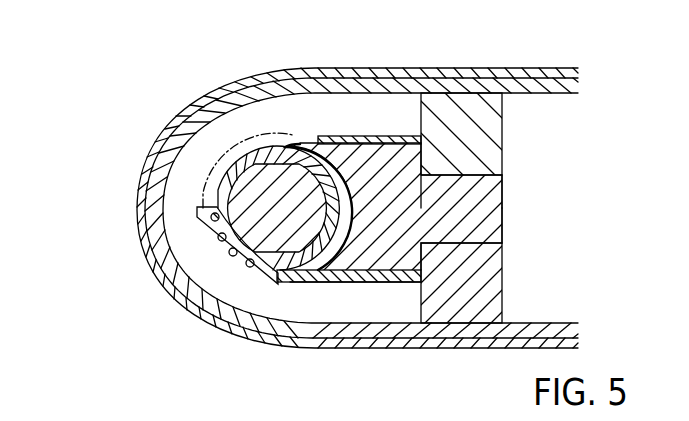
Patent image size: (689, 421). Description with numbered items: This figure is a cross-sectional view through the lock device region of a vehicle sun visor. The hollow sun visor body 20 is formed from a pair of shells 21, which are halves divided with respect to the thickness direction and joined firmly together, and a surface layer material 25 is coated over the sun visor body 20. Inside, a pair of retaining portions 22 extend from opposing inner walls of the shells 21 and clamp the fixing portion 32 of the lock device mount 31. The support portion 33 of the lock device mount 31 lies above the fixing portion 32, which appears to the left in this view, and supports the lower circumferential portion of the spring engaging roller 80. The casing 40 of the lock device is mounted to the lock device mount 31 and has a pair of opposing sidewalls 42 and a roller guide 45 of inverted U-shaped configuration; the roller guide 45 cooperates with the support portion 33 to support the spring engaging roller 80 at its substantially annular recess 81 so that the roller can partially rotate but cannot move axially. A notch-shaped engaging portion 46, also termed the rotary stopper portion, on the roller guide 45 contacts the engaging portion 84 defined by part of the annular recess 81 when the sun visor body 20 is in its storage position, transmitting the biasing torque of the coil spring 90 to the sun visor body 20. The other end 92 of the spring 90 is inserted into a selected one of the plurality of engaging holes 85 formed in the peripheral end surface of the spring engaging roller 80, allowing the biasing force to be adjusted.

The sun visor body 20 is at (62, 163).
The shells 21 is at (156, 171).
The retaining portions 22 is at (490, 127).
The surface layer material 25 is at (172, 119).
The lock device mount 31 is at (367, 273).
The fixing portion 32 is at (498, 202).
The support portion 33 is at (362, 168).
The casing 40 is at (333, 284).
The sidewalls 42 is at (380, 136).
The roller guide 45 is at (257, 138).
The engaging portion 46 is at (252, 287).
The spring engaging roller 80 is at (205, 323).
The annular recess 81 is at (291, 144).
The engaging portion 84 is at (279, 284).
The engaging holes 85 is at (232, 272).
The spring 90 is at (226, 219).
The other end of the spring 92 is at (230, 192).